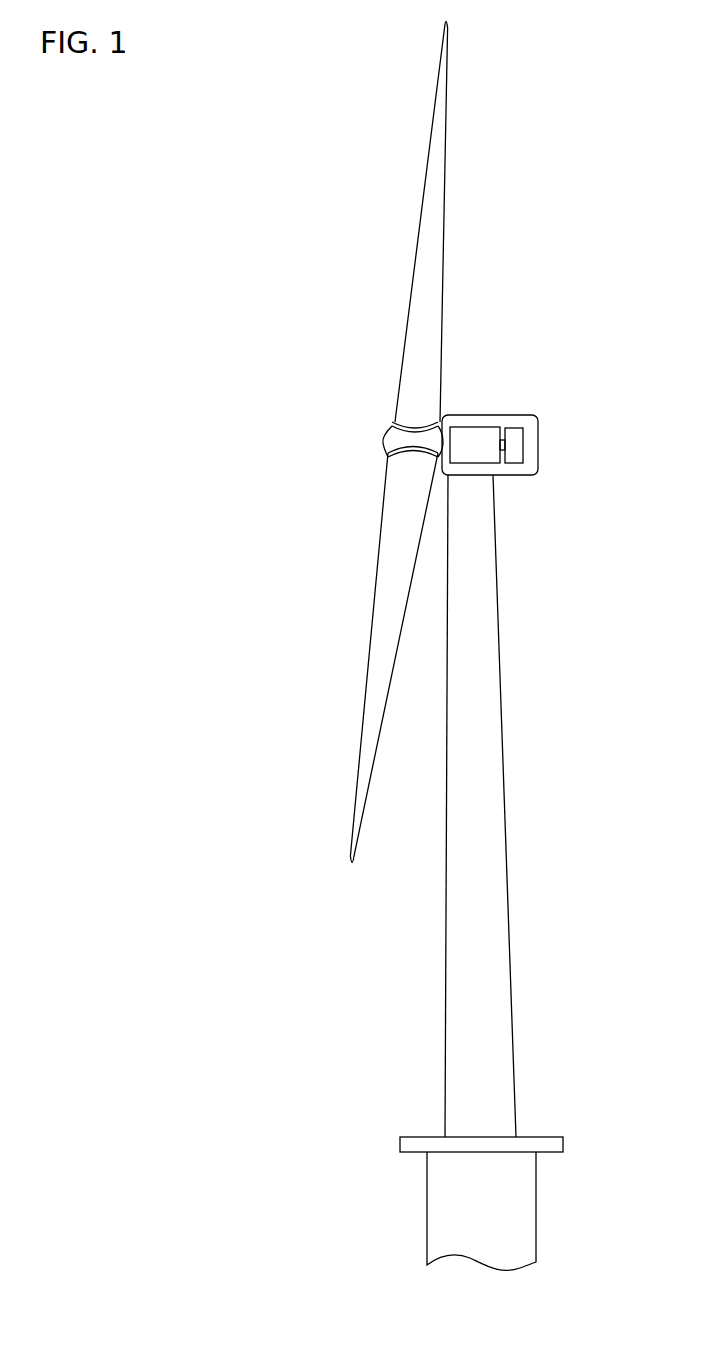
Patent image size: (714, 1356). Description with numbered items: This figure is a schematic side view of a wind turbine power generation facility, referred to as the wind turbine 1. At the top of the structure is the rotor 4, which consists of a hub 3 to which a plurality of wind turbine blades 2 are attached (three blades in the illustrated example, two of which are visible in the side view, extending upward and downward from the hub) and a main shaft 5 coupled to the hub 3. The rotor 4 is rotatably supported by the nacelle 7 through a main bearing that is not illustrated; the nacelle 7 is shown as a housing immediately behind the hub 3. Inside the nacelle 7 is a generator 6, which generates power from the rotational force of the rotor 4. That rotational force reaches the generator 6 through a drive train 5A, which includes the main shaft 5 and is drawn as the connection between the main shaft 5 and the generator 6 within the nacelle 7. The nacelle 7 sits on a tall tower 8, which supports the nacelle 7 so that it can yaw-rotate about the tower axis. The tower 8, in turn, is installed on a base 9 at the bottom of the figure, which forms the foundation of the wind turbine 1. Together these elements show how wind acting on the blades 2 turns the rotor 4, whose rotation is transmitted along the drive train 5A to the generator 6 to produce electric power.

The wind turbine 1 is at (600, 132).
The wind turbine blade 2 is at (425, 164).
The hub 3 is at (385, 438).
The rotor 4 is at (322, 405).
The main shaft 5 is at (445, 430).
The drive train 5A is at (480, 427).
The generator 6 is at (520, 427).
The nacelle 7 is at (540, 440).
The tower 8 is at (503, 804).
The base 9 is at (537, 1210).